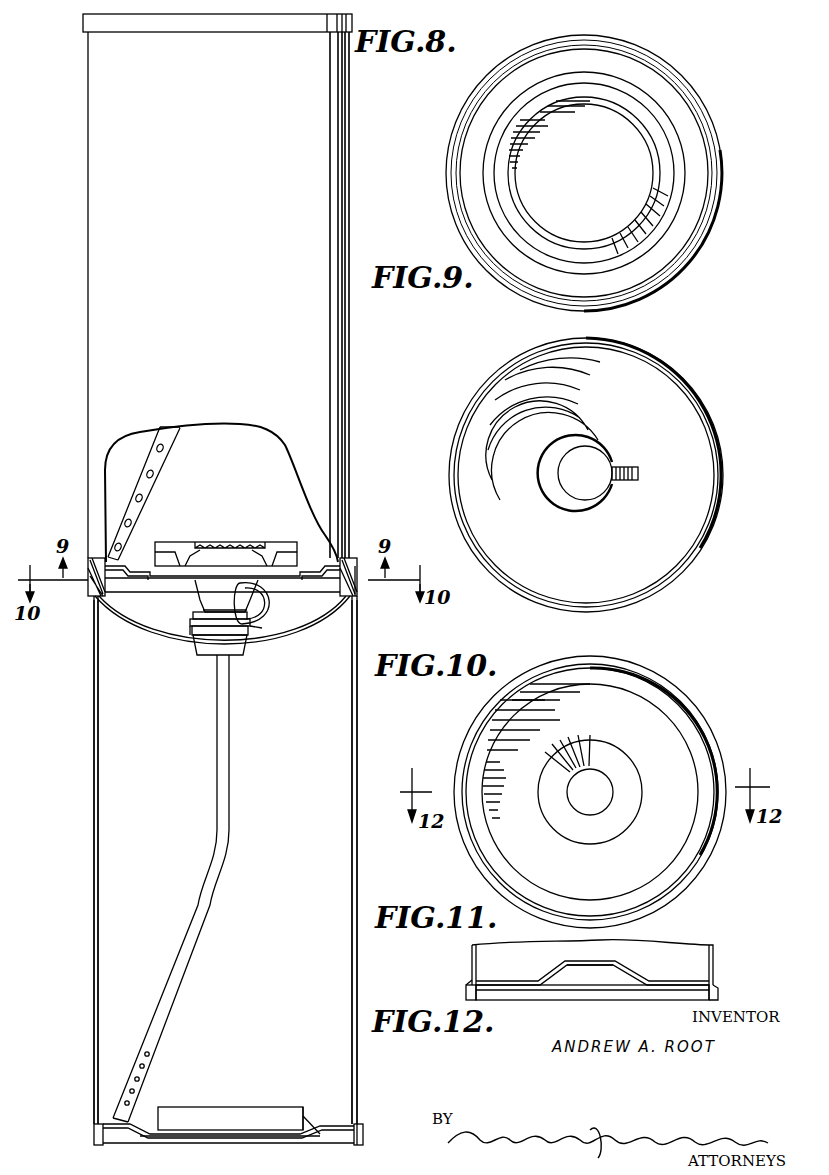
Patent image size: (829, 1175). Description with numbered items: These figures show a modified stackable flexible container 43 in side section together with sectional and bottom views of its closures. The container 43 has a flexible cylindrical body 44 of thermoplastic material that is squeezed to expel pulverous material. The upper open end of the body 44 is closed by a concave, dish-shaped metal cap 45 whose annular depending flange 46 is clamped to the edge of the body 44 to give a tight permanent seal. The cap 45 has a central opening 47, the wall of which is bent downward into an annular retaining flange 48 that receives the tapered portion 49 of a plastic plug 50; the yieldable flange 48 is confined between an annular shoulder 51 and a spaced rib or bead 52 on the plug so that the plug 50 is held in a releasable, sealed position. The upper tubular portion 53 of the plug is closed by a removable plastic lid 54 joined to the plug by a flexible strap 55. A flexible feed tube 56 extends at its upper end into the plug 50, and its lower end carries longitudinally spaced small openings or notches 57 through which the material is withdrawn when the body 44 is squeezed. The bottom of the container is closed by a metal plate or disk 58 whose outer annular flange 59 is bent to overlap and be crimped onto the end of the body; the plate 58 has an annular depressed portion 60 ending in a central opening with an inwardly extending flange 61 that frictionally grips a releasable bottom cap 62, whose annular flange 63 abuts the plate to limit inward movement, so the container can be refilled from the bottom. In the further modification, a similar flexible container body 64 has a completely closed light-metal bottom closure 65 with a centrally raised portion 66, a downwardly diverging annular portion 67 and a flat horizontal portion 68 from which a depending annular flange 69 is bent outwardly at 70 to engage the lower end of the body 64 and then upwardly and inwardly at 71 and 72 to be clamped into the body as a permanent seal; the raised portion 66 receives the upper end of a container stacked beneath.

In FIG. 8, the flexible container 43 is at (352, 180).
In FIG. 9, the flexible container 43 is at (716, 134).
In FIG. 8, the flexible cylindrical body 44 is at (360, 348).
In FIG. 10, the flexible cylindrical body 44 is at (722, 520).
In FIG. 8, the concave dish-shaped metal cap 45 is at (146, 14).
In FIG. 10, the concave dish-shaped metal cap 45 is at (690, 497).
In FIG. 8, the annular depending flange 46 is at (86, 26).
In FIG. 8, the centrally disposed opening 47 is at (242, 632).
In FIG. 8, the annular retaining flange 48 is at (193, 630).
In FIG. 8, the tapered portion 49 is at (240, 652).
In FIG. 8, the plastic plug 50 is at (203, 616).
In FIG. 8, the annular shoulder 51 is at (192, 622).
In FIG. 8, the rib or bead 52 is at (220, 650).
In FIG. 8, the upper tubular portion 53 is at (232, 612).
In FIG. 8, the plastic cover or lid 54 is at (230, 598).
In FIG. 10, the plastic cover or lid 54 is at (598, 468).
In FIG. 8, the flexible strap 55 is at (264, 628).
In FIG. 10, the flexible strap 55 is at (625, 472).
In FIG. 8, the flexible feed tube 56 is at (160, 466).
In FIG. 8, the small openings or notches 57 is at (150, 480).
In FIG. 8, the metal cylindrical plate or disk 58 is at (318, 566).
In FIG. 9, the metal cylindrical plate or disk 58 is at (672, 106).
In FIG. 8, the outer annular flange portion 59 is at (352, 578).
In FIG. 9, the outer annular flange portion 59 is at (710, 213).
In FIG. 8, the annular depressed portion 60 is at (320, 1128).
In FIG. 8, the annular inwardly extending flange 61 is at (308, 1120).
In FIG. 8, the bottom cap or closure 62 is at (245, 542).
In FIG. 9, the bottom cap or closure 62 is at (650, 180).
In FIG. 8, the annular flange portion 63 is at (148, 1134).
In FIG. 9, the annular flange portion 63 is at (648, 100).
In FIG. 11, the flexible container body 64 is at (706, 746).
In FIG. 12, the flexible container body 64 is at (712, 962).
In FIG. 12, the bottom or end closure 65 is at (540, 998).
In FIG. 11, the centrally raised or offset portion 66 is at (602, 796).
In FIG. 12, the centrally raised or offset portion 66 is at (605, 965).
In FIG. 11, the downwardly diverging annular portion 67 is at (620, 760).
In FIG. 12, the downwardly diverging annular portion 67 is at (633, 978).
In FIG. 12, the transverse horizontal flat portion 68 is at (700, 986).
In FIG. 12, the depending annular flange 69 is at (695, 998).
In FIG. 12, the outwardly bent portion 70 is at (483, 1004).
In FIG. 12, the upwardly bent portion 71 is at (466, 996).
In FIG. 12, the inwardly bent portion 72 is at (464, 986).